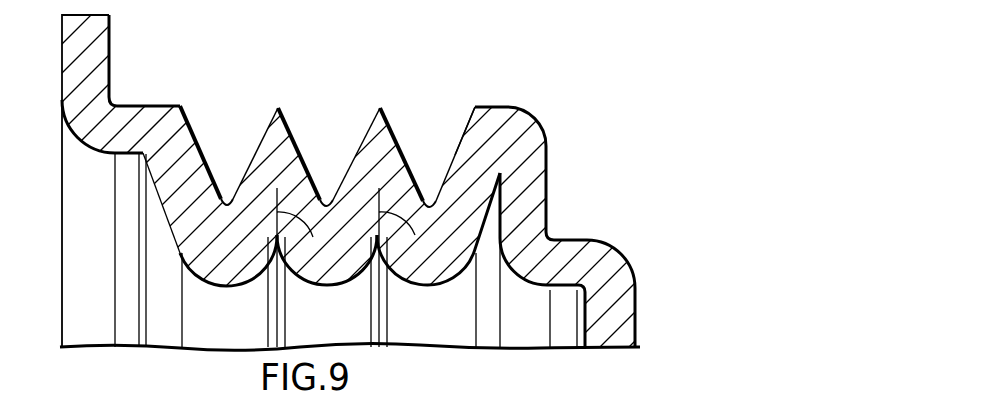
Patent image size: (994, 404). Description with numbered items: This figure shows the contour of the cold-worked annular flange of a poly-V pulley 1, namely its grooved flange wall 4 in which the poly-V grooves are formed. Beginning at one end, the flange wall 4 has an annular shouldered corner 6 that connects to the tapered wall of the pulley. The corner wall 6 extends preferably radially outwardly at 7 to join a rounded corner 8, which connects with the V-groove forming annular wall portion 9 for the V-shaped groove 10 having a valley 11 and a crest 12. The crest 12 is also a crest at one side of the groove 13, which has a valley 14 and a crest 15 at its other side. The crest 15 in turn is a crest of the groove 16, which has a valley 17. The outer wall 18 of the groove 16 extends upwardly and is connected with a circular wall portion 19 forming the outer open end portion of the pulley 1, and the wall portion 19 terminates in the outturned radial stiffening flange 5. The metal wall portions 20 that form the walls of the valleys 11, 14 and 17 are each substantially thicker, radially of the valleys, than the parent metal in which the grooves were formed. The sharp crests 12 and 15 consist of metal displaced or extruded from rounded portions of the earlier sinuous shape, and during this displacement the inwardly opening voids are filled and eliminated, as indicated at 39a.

The pulley 1 is at (654, 282).
The poly-V flange wall 4 is at (327, 113).
The outturned radial flange 5 is at (88, 50).
The annular shouldered corner 6 is at (608, 250).
The radially outwardly extending wall 7 is at (528, 188).
The rounded corner 8 is at (503, 114).
The V-groove forming annular wall portion 9 is at (466, 157).
The V-shaped groove 10 is at (402, 152).
The valley 11 is at (430, 200).
The crest 12 is at (380, 106).
The groove 13 is at (303, 152).
The valley 14 is at (328, 200).
The crest 15 is at (279, 107).
The groove 16 is at (203, 167).
The valley 17 is at (228, 200).
The outer wall 18 is at (181, 135).
The circular wall portion 19 is at (133, 120).
The metal wall portions 20 is at (227, 270).
The filled voids 39a is at (366, 233).